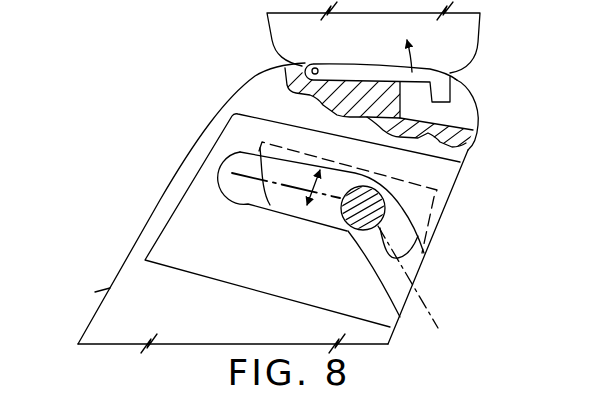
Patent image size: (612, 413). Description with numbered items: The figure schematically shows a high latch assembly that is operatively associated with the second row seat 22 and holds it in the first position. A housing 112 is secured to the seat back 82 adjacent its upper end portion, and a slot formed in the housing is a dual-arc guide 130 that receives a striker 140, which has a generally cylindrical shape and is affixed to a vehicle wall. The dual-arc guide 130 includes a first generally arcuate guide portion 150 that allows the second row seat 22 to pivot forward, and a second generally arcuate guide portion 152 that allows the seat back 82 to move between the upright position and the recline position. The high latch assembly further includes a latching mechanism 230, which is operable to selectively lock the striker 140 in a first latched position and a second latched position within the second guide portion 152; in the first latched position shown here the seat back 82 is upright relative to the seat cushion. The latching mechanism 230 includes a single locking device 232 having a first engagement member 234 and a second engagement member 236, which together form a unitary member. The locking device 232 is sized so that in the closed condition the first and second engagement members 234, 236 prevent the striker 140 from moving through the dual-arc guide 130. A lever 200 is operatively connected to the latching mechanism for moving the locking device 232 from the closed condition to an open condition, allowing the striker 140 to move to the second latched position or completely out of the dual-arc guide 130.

The second row seat 22 is at (118, 88).
The seat back 82 is at (82, 292).
The housing 112 is at (450, 173).
The dual-arc guide 130 is at (253, 217).
The striker 140 is at (357, 231).
The first guide portion 150 is at (386, 273).
The second guide portion 152 is at (233, 167).
The lever 200 is at (340, 65).
The latching mechanism 230 is at (277, 137).
The locking device 232 is at (422, 204).
The first engagement member 234 is at (407, 240).
The second engagement member 236 is at (292, 196).